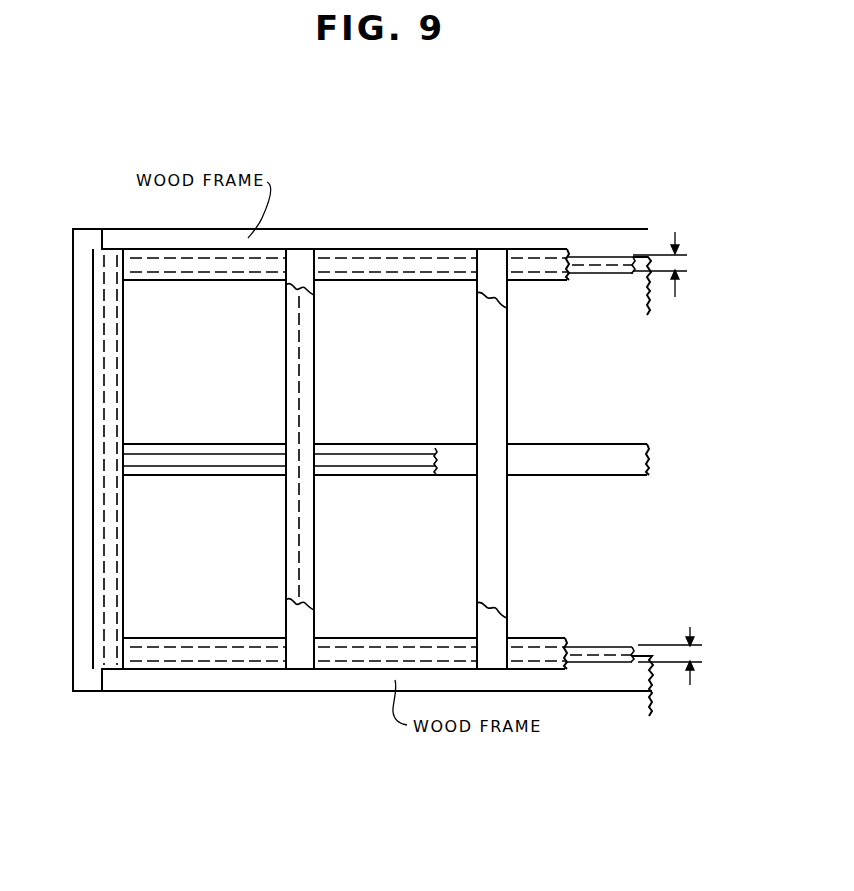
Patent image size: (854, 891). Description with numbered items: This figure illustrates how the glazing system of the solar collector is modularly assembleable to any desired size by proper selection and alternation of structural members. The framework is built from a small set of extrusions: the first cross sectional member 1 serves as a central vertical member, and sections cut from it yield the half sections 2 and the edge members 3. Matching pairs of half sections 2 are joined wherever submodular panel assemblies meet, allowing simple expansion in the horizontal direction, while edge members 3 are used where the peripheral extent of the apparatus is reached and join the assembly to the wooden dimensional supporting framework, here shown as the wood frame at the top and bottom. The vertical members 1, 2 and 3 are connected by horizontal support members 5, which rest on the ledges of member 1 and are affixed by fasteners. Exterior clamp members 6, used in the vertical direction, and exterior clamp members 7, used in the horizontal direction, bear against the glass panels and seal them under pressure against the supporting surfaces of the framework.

The first cross sectional member 1 is at (497, 357).
The half section 2 is at (290, 356).
The edge member 3 is at (684, 264).
The horizontal support member 5 is at (614, 442).
The exterior clamp cross sectional member 6 is at (97, 565).
The horizontal exterior clamp member 7 is at (176, 449).